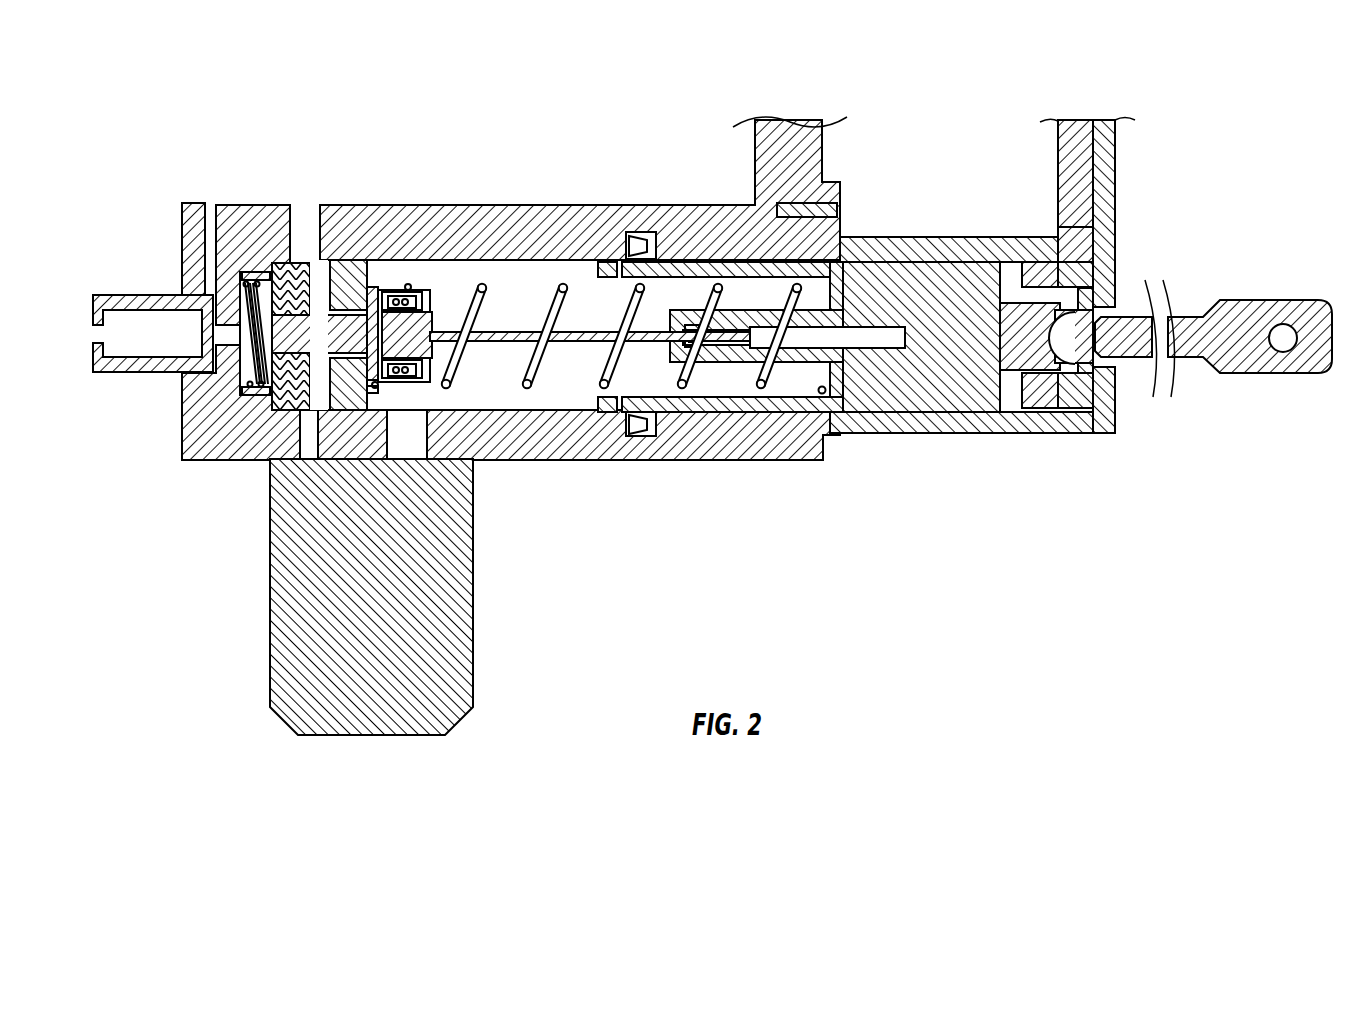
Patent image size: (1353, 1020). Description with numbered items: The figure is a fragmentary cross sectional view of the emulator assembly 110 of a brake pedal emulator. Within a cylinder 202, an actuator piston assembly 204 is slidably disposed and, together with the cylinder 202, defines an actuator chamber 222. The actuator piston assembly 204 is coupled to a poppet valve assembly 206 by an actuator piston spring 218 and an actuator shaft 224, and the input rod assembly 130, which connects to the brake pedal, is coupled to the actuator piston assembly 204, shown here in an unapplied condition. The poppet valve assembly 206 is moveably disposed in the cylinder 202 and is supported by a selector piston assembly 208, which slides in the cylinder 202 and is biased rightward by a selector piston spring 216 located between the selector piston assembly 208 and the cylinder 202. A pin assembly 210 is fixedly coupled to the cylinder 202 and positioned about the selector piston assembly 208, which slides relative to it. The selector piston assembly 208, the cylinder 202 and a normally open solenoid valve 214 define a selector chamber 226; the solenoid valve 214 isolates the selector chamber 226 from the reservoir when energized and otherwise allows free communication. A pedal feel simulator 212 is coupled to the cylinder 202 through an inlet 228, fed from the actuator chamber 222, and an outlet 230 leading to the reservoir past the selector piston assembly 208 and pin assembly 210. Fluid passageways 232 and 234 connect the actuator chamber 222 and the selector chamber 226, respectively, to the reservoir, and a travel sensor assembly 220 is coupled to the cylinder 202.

The emulator assembly 110 is at (198, 128).
The input rod assembly 130 is at (1197, 280).
The cylinder 202 is at (780, 460).
The actuator piston assembly 204 is at (822, 373).
The poppet valve assembly 206 is at (432, 297).
The selector piston assembly 208 is at (377, 403).
The pin assembly 210 is at (297, 255).
The pedal feel simulator 212 is at (473, 580).
The normally open solenoid valve 214 is at (117, 373).
The selector piston spring 216 is at (247, 387).
The actuator piston spring 218 is at (607, 360).
The travel sensor assembly 220 is at (895, 237).
The actuator chamber 222 is at (648, 372).
The actuator shaft 224 is at (522, 326).
The selector chamber 226 is at (233, 205).
The inlet 228 is at (420, 435).
The outlet 230 is at (305, 450).
The fluid passageway 232 is at (318, 205).
The fluid passageway 234 is at (210, 205).